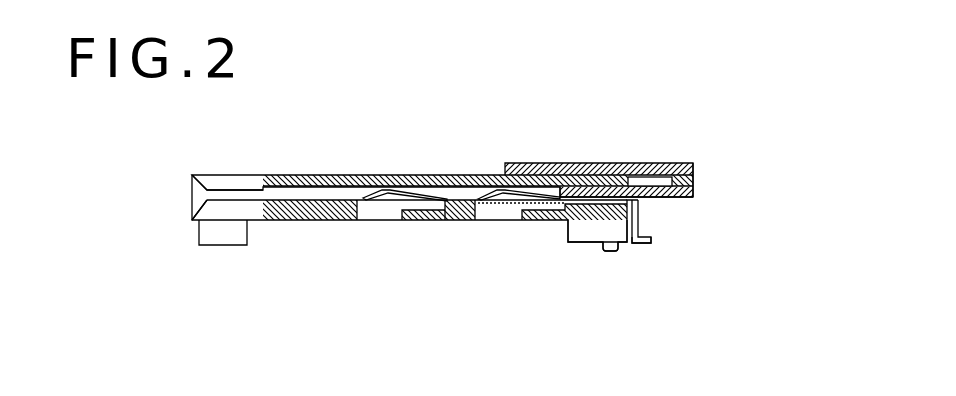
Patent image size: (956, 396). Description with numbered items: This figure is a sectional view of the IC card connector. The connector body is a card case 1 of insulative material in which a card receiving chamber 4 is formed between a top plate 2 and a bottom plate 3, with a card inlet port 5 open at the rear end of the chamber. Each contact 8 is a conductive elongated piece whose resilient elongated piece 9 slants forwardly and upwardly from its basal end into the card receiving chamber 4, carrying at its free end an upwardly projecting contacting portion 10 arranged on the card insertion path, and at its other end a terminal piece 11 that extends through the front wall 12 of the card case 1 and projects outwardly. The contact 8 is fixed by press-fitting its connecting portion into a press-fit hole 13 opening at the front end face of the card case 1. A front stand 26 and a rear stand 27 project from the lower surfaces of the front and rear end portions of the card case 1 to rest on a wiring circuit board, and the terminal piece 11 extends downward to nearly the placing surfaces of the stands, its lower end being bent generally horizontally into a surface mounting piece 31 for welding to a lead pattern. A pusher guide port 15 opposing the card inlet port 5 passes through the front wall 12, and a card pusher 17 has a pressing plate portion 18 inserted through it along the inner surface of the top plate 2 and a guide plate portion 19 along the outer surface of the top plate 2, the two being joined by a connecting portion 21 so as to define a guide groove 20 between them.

The card case 1 is at (293, 175).
The top plate 2 is at (338, 175).
The bottom plate 3 is at (324, 221).
The card receiving chamber 4 is at (440, 175).
The card inlet port 5 is at (193, 193).
The contact 8 is at (400, 190).
The resilient elongated piece 9 is at (552, 172).
The contacting portion 10 is at (510, 163).
The terminal piece 11 is at (642, 219).
The front wall 12 is at (612, 252).
The press-fit hole 13 is at (598, 226).
The pusher guide port 15 is at (604, 163).
The card pusher 17 is at (692, 163).
The pressing plate portion 18 is at (650, 198).
The guide plate portion 19 is at (623, 163).
The guide groove 20 is at (662, 163).
The connecting portion 21 is at (694, 181).
The front stand 26 is at (568, 234).
The rear stand 27 is at (222, 241).
The surface mounting piece 31 is at (648, 244).